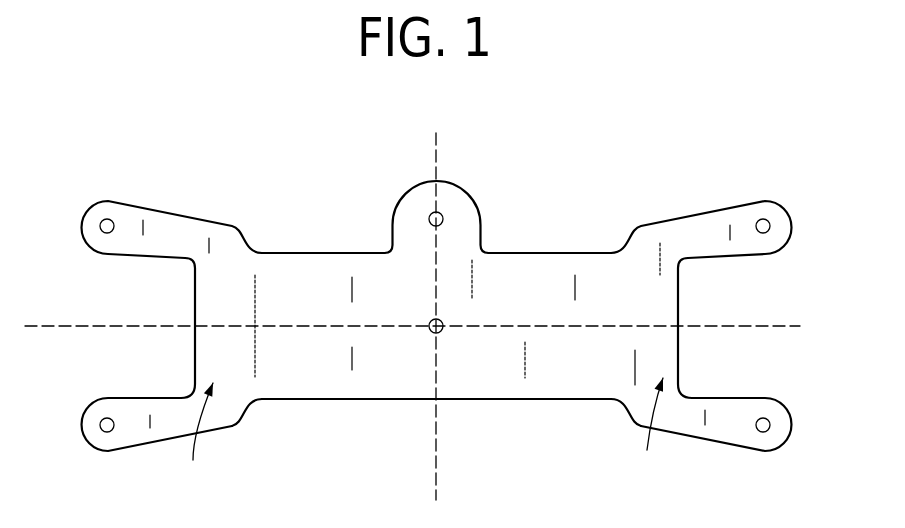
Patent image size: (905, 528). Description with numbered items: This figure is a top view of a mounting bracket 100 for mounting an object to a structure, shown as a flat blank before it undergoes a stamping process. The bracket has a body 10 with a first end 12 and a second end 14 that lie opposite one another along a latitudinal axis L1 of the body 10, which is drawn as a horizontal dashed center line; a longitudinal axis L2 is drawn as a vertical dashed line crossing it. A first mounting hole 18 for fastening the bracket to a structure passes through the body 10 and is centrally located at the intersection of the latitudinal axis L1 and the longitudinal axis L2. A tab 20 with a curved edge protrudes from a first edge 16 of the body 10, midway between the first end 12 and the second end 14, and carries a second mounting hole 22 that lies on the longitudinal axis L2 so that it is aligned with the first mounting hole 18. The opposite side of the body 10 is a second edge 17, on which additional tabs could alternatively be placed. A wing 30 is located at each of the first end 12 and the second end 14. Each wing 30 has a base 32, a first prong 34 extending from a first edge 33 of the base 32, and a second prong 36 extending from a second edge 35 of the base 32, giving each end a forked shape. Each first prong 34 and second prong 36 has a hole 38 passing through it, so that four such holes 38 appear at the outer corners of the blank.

The mounting bracket 100 is at (183, 97).
The body 10 is at (533, 268).
The first end 12 is at (253, 407).
The second end 14 is at (617, 407).
The first edge 16 is at (325, 252).
The second edge 17 is at (398, 400).
The first mounting hole 18 is at (440, 330).
The tab 20 is at (407, 202).
The second mounting hole 22 is at (447, 217).
The wing 30 is at (422, 436).
The base 32 is at (220, 302).
The first edge 33 is at (187, 262).
The first prong 34 is at (177, 227).
The second edge 35 is at (193, 380).
The second prong 36 is at (143, 433).
The hole 38 is at (107, 227).
The latitudinal axis L1 is at (777, 320).
The longitudinal axis L2 is at (440, 482).